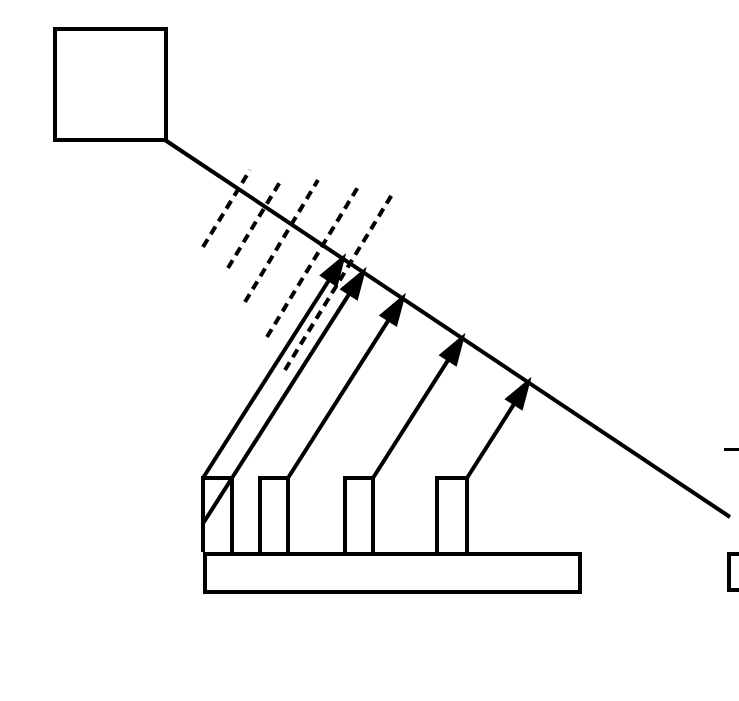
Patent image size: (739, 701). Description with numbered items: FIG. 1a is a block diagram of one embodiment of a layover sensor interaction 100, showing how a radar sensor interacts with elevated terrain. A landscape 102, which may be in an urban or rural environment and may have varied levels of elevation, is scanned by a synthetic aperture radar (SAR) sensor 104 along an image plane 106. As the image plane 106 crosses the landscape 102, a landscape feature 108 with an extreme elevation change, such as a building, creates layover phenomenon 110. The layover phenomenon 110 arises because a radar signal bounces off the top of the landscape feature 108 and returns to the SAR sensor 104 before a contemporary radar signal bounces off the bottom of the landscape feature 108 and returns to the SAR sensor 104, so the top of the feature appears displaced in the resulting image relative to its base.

The layover sensor interaction 100 is at (640, 626).
The landscape 102 is at (490, 584).
The synthetic aperture radar (SAR) sensor 104 is at (136, 130).
The image plane 106 is at (447, 328).
The landscape feature 108 is at (203, 493).
The layover phenomenon 110 is at (247, 412).